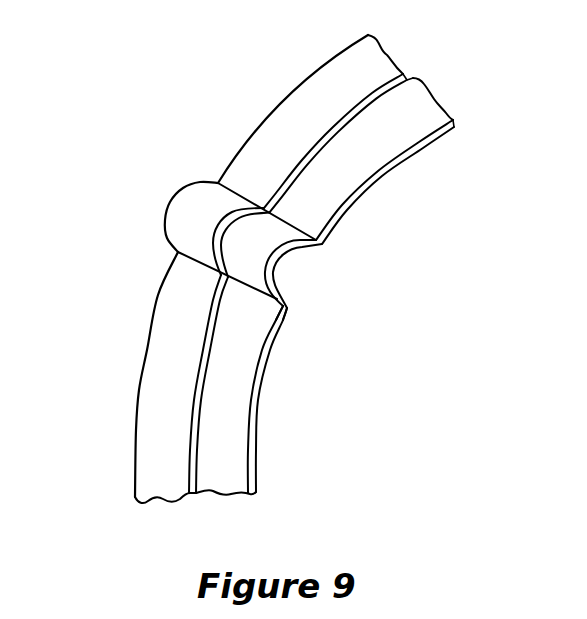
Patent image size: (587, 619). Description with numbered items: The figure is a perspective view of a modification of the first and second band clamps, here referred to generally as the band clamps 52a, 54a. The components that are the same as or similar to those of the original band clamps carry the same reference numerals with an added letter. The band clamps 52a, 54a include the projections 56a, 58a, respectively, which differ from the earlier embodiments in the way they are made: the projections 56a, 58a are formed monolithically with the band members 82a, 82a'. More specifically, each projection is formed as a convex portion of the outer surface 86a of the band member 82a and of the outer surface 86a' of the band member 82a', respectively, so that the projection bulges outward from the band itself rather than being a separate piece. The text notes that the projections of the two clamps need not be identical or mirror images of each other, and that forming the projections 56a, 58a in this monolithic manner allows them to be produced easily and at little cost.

The band clamp 52a is at (310, 100).
The band clamp 54a is at (424, 141).
The projection 56a is at (182, 207).
The projection 58a is at (293, 248).
The band member 82a is at (143, 374).
The band member 82a' is at (317, 399).
The outer surface 86a is at (118, 465).
The outer surface 86a' is at (283, 466).